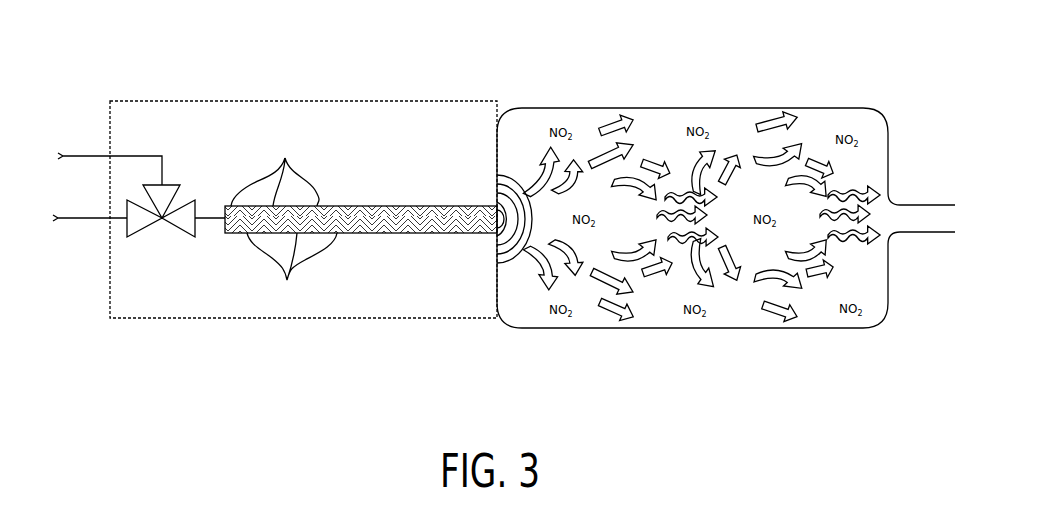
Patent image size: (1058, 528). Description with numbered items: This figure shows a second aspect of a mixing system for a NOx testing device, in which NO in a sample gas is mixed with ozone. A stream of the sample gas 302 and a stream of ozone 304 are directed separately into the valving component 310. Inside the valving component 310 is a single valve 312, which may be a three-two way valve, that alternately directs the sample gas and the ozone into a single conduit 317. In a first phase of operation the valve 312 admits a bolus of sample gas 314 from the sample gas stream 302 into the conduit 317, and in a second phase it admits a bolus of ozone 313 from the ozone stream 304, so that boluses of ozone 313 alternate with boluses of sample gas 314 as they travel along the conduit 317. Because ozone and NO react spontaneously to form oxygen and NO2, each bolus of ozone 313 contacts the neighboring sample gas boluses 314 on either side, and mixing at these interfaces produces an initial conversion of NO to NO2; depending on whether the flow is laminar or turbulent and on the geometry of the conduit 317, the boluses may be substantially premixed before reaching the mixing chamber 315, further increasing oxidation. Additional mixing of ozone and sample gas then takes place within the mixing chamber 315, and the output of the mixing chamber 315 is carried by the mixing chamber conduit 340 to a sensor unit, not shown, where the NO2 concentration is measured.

The sample gas stream 302 is at (108, 223).
The ozone stream 304 is at (108, 155).
The valving component 310 is at (150, 102).
The valve 312 is at (163, 195).
The bolus of ozone 313 is at (275, 164).
The bolus of sample gas 314 is at (292, 275).
The mixing chamber 315 is at (693, 108).
The conduit 317 is at (442, 205).
The mixing chamber conduit 340 is at (910, 203).